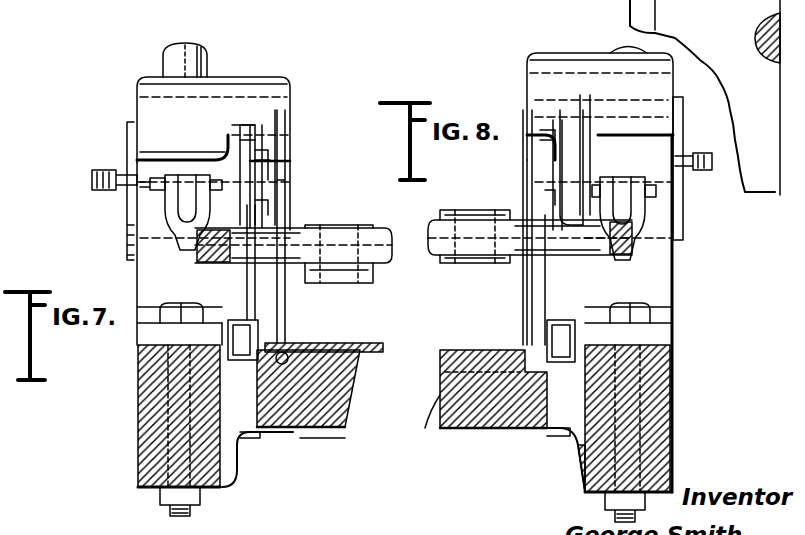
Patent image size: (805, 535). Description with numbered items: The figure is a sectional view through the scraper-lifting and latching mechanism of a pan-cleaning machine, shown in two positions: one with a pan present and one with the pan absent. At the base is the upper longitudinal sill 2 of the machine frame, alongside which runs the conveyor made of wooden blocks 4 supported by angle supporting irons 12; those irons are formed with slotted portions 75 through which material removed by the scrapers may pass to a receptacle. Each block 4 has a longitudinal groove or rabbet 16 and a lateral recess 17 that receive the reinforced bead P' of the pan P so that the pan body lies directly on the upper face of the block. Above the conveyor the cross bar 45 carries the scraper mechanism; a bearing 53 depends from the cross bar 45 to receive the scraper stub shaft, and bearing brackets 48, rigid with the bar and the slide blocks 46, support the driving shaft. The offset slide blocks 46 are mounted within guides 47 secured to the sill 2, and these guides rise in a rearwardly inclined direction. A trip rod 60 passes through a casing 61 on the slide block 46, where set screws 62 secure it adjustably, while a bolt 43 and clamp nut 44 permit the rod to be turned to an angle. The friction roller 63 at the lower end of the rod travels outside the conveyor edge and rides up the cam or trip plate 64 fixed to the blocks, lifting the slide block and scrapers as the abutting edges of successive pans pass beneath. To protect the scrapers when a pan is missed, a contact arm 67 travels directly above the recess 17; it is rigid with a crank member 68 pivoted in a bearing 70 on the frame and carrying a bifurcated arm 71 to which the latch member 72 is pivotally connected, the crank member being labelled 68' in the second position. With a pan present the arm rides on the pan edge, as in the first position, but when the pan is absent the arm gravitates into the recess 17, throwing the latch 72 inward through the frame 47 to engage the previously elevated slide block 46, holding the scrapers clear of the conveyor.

In FIG. 7, the upper longitudinal sill 2 is at (150, 432).
In FIG. 8, the upper longitudinal sill 2 is at (655, 448).
In FIG. 7, the conveyor block 4 is at (310, 445).
In FIG. 8, the conveyor block 4 is at (440, 428).
In FIG. 7, the angle supporting iron 12 is at (240, 480).
In FIG. 8, the angle supporting iron 12 is at (572, 470).
In FIG. 7, the longitudinal groove or rabbet 16 is at (370, 360).
In FIG. 8, the longitudinal groove or rabbet 16 is at (484, 360).
In FIG. 7, the lateral recess 17 is at (350, 410).
In FIG. 8, the lateral recess 17 is at (600, 362).
In FIG. 7, the bolt 43 is at (120, 188).
In FIG. 8, the bolt 43 is at (712, 160).
In FIG. 7, the clamp nut 44 is at (127, 180).
In FIG. 8, the clamp nut 44 is at (690, 175).
In FIG. 7, the cross bar 45 is at (305, 225).
In FIG. 8, the cross bar 45 is at (480, 222).
In FIG. 8, the slide block 46 is at (683, 223).
In FIG. 8, the guide 47 is at (660, 302).
In FIG. 7, the bearing bracket 48 is at (215, 87).
In FIG. 8, the bearing bracket 48 is at (578, 48).
In FIG. 7, the bearing 53 is at (340, 272).
In FIG. 8, the bearing 53 is at (472, 262).
In FIG. 7, the trip rod 60 is at (288, 296).
In FIG. 8, the trip rod 60 is at (553, 200).
In FIG. 7, the casing 61 is at (270, 188).
In FIG. 8, the casing 61 is at (540, 165).
In FIG. 7, the set screw 62 is at (292, 160).
In FIG. 8, the set screw 62 is at (540, 140).
In FIG. 7, the friction roller 63 is at (230, 345).
In FIG. 8, the friction roller 63 is at (548, 332).
In FIG. 7, the cam or trip plate 64 is at (225, 362).
In FIG. 8, the cam or trip plate 64 is at (600, 390).
In FIG. 7, the contact arm 67 is at (258, 318).
In FIG. 8, the contact arm 67 is at (523, 318).
In FIG. 7, the crank member 68 is at (141, 251).
In FIG. 8, the hatched shaft section 68' is at (692, 256).
In FIG. 7, the bearing 70 is at (180, 242).
In FIG. 8, the bearing 70 is at (635, 250).
In FIG. 8, the bifurcated arm 71 is at (637, 207).
In FIG. 7, the latch member 72 is at (185, 178).
In FIG. 8, the latch member 72 is at (640, 178).
In FIG. 7, the slotted portion 75 is at (255, 436).
In FIG. 8, the slotted portion 75 is at (560, 438).
In FIG. 7, the pan P is at (376, 324).
In FIG. 7, the reinforced bead P' is at (370, 396).